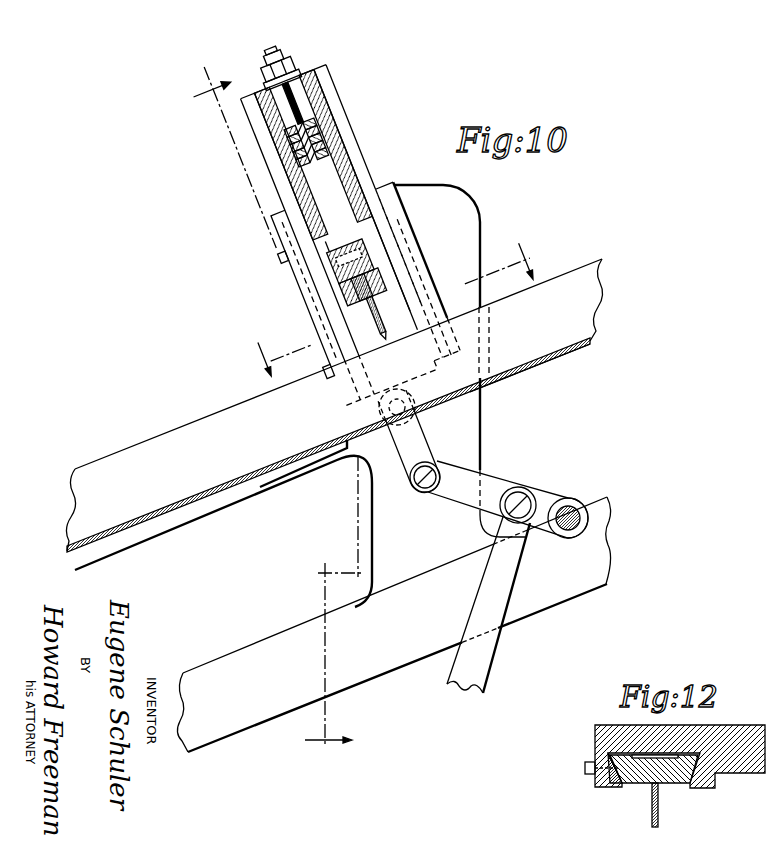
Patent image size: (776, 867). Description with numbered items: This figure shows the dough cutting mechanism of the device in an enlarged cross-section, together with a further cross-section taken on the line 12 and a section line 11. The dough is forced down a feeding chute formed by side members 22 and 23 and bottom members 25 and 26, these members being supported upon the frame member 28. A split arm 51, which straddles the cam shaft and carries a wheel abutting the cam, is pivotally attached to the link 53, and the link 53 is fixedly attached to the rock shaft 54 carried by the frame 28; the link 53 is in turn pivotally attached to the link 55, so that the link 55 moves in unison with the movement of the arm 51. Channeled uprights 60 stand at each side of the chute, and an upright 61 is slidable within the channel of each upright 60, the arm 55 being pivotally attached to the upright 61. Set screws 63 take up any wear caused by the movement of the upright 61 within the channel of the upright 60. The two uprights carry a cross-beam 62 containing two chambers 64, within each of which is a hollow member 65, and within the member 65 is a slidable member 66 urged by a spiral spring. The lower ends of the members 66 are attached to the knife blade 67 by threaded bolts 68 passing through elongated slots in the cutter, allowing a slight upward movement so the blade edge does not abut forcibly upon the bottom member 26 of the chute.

In FIG. 10, the section line 11- 11 is at (267, 406).
In FIG. 10, the section line 12— 12 is at (397, 311).
In FIG. 10, the side member 22 is at (603, 295).
In FIG. 10, the side member 23 is at (207, 416).
In FIG. 10, the bottom member 25 is at (545, 368).
In FIG. 10, the bottom member 26 is at (233, 484).
In FIG. 10, the frame member 28 is at (597, 550).
In FIG. 10, the split arm 51 is at (510, 573).
In FIG. 10, the link 53 is at (492, 483).
In FIG. 10, the rock shaft 54 is at (572, 507).
In FIG. 10, the link 55 is at (422, 442).
In FIG. 10, the channeled upright 60 is at (385, 181).
In FIG. 12, the channeled upright 60 is at (722, 737).
In FIG. 10, the upright 61 is at (340, 125).
In FIG. 12, the upright 61 is at (672, 778).
In FIG. 10, the cross-beam 62 is at (318, 105).
In FIG. 10, the set screw 63 is at (283, 262).
In FIG. 12, the set screw 63 is at (585, 768).
In FIG. 10, the chamber 64 is at (393, 290).
In FIG. 10, the hollow member 65 is at (270, 94).
In FIG. 10, the slidable member 66 is at (330, 248).
In FIG. 10, the knife blade 67 is at (381, 318).
In FIG. 12, the knife blade 67 is at (652, 813).
In FIG. 10, the threaded bolt 68 is at (343, 283).